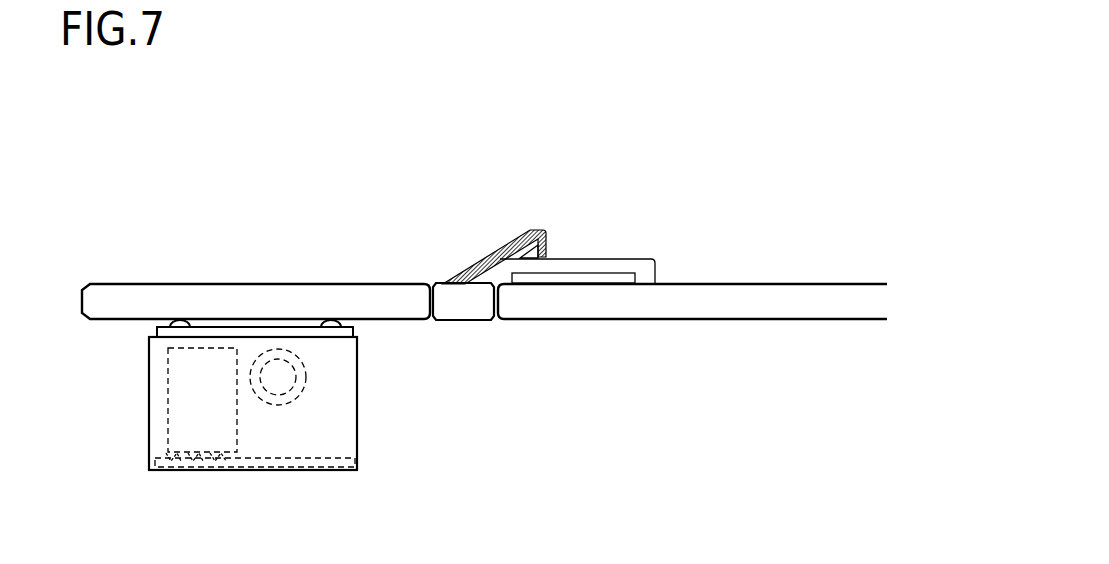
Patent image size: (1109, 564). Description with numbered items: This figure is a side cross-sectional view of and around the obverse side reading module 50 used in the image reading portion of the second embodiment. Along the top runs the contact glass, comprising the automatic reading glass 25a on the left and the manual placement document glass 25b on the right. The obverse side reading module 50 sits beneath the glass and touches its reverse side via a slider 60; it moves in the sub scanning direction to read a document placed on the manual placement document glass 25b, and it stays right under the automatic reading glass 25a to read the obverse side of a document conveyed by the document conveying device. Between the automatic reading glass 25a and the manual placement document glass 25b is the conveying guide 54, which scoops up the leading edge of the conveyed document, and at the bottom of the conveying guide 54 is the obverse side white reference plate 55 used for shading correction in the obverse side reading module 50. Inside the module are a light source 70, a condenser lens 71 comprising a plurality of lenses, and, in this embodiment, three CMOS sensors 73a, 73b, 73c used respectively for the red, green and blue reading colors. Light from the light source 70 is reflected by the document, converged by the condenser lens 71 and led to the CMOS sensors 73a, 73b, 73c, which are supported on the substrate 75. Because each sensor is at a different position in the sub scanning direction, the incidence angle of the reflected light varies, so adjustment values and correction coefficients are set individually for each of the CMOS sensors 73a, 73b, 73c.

The automatic reading glass 25a is at (121, 296).
The manual placement document glass 25b is at (830, 292).
The conveying guide 54 is at (472, 261).
The obverse side white reference plate 55 is at (572, 272).
The obverse side reading module 50 is at (379, 443).
The slider 60 is at (355, 332).
The light source 70 is at (307, 377).
The condenser lens 71 is at (182, 392).
The CMOS sensor 73a is at (168, 463).
The CMOS sensor 73b is at (193, 463).
The CMOS sensor 73c is at (215, 463).
The substrate 75 is at (316, 468).